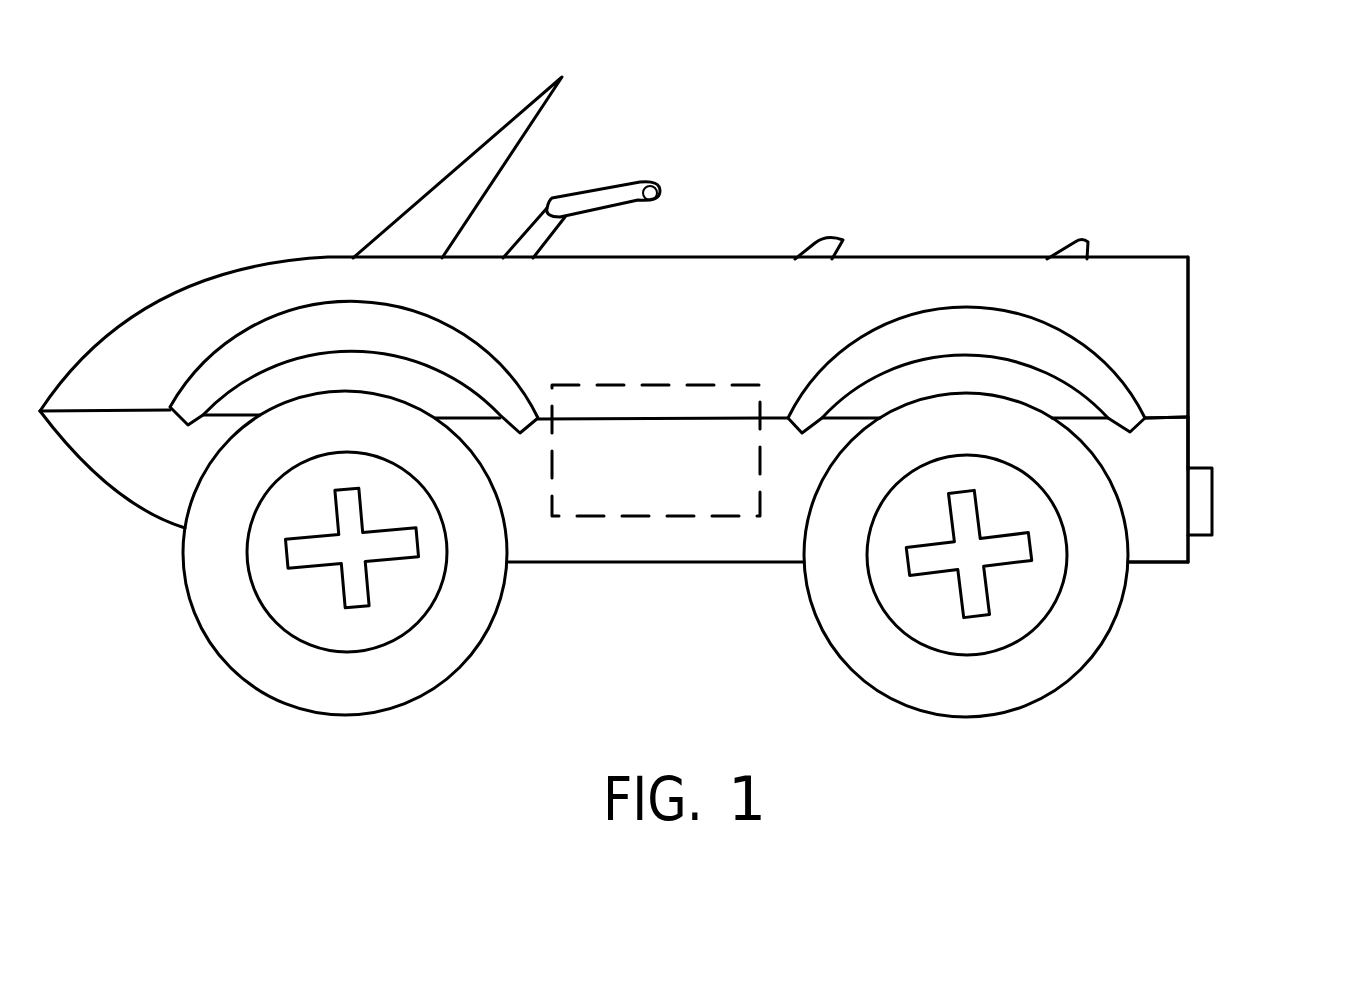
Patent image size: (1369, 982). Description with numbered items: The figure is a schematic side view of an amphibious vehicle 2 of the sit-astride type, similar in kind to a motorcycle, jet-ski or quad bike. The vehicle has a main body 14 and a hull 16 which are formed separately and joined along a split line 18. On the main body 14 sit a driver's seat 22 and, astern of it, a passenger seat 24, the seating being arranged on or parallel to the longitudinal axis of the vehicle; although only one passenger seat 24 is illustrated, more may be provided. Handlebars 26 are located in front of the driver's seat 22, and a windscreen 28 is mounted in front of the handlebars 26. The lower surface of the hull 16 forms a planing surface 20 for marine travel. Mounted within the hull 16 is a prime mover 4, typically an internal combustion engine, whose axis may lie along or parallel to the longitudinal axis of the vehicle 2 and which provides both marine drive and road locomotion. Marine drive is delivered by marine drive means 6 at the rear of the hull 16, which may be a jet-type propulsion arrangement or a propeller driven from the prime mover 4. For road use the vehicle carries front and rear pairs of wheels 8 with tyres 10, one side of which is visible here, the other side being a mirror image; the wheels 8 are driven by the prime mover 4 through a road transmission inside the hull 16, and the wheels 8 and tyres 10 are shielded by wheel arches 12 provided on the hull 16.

The amphibious vehicle 2 is at (981, 116).
The prime mover 4 is at (644, 478).
The marine drive means 6 is at (1202, 505).
The wheels 8 is at (420, 575).
The tyres 10 is at (430, 646).
The wheel arches 12 is at (287, 333).
The main body 14 is at (1172, 295).
The hull 16 is at (1165, 445).
The split line 18 is at (1137, 421).
The planing surface 20 is at (1152, 568).
The driver's seat 22 is at (848, 238).
The passenger seat 24 is at (1089, 242).
The handlebars 26 is at (595, 202).
The windscreen 28 is at (468, 172).